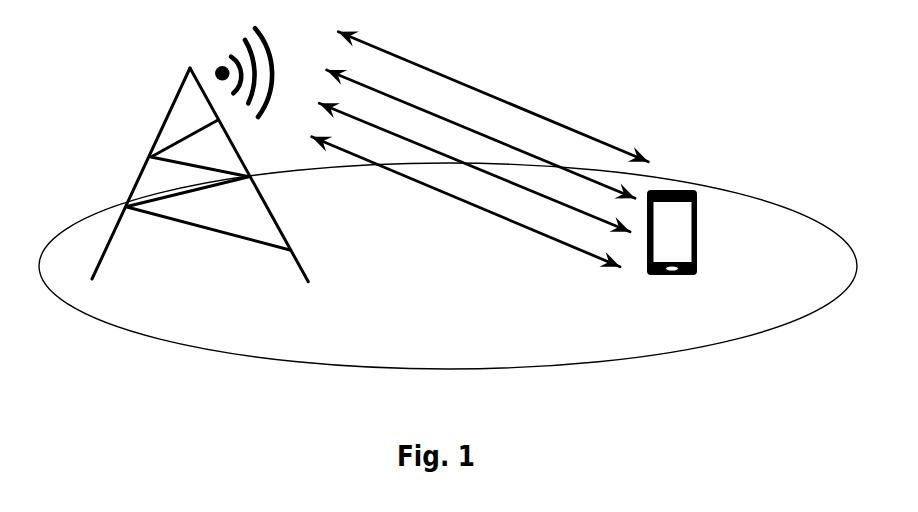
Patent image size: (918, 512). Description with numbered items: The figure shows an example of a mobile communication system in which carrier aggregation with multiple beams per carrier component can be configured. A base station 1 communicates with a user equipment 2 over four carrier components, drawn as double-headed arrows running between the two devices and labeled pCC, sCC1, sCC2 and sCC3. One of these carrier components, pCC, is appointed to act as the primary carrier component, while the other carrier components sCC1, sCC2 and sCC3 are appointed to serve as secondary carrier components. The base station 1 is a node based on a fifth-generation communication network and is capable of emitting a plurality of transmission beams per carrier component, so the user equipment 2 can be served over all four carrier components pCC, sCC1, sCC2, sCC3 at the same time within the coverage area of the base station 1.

The base station 1 is at (174, 72).
The user equipment 2 is at (708, 232).
The primary carrier component pCC is at (493, 96).
The secondary carrier component sCC1 is at (481, 134).
The secondary carrier component sCC2 is at (474, 167).
The secondary carrier component sCC3 is at (466, 201).